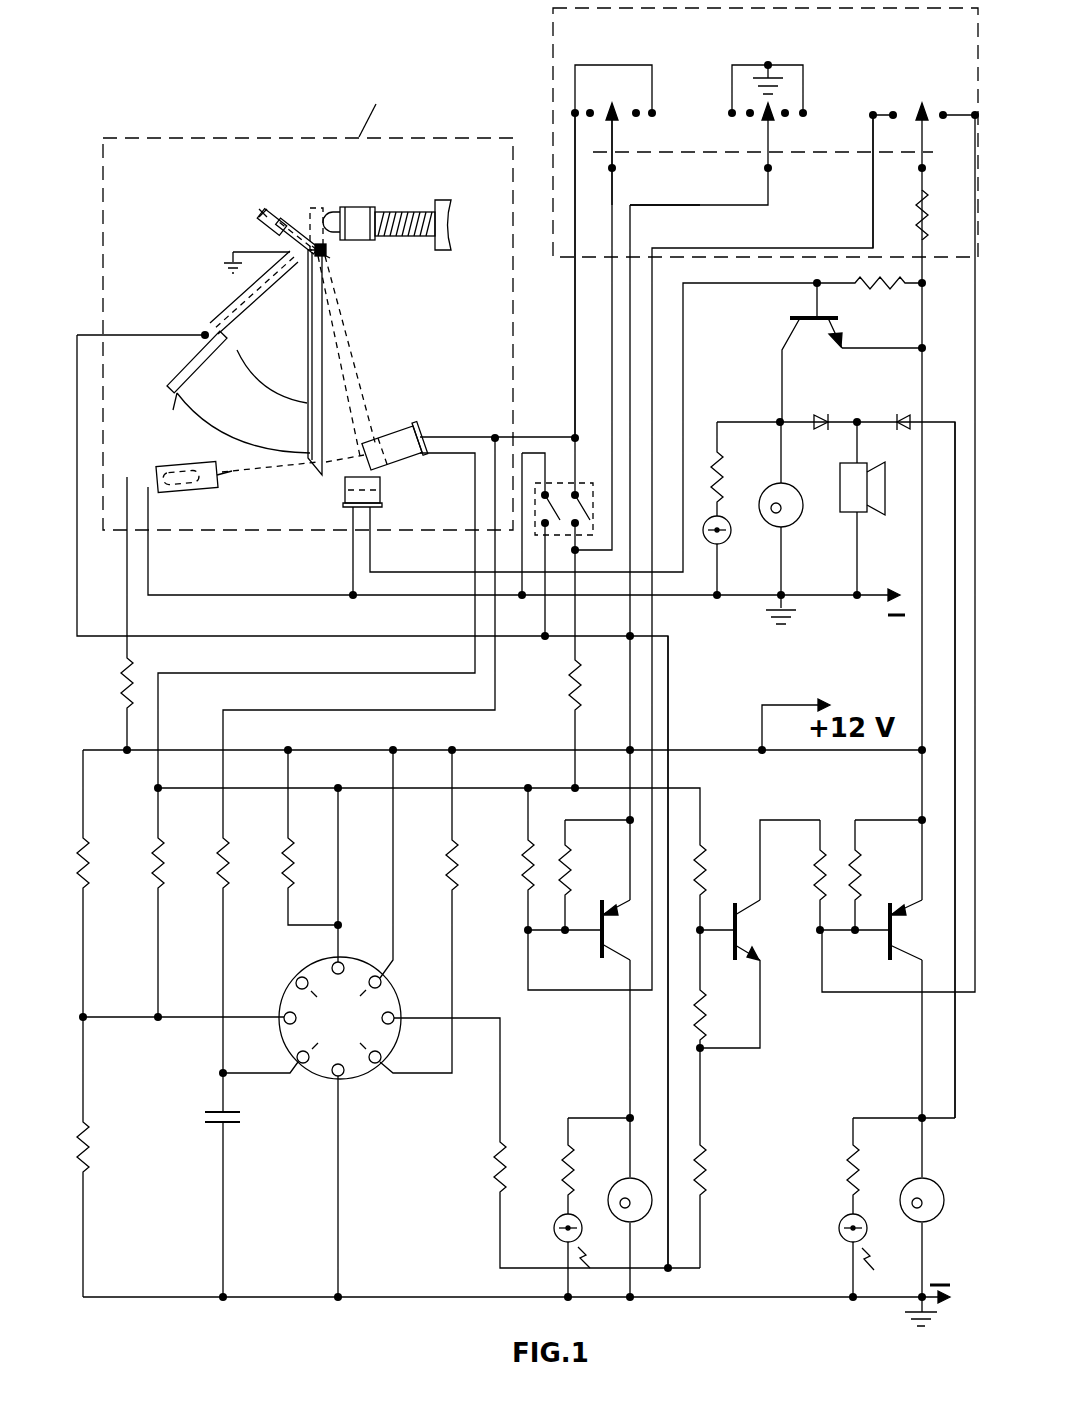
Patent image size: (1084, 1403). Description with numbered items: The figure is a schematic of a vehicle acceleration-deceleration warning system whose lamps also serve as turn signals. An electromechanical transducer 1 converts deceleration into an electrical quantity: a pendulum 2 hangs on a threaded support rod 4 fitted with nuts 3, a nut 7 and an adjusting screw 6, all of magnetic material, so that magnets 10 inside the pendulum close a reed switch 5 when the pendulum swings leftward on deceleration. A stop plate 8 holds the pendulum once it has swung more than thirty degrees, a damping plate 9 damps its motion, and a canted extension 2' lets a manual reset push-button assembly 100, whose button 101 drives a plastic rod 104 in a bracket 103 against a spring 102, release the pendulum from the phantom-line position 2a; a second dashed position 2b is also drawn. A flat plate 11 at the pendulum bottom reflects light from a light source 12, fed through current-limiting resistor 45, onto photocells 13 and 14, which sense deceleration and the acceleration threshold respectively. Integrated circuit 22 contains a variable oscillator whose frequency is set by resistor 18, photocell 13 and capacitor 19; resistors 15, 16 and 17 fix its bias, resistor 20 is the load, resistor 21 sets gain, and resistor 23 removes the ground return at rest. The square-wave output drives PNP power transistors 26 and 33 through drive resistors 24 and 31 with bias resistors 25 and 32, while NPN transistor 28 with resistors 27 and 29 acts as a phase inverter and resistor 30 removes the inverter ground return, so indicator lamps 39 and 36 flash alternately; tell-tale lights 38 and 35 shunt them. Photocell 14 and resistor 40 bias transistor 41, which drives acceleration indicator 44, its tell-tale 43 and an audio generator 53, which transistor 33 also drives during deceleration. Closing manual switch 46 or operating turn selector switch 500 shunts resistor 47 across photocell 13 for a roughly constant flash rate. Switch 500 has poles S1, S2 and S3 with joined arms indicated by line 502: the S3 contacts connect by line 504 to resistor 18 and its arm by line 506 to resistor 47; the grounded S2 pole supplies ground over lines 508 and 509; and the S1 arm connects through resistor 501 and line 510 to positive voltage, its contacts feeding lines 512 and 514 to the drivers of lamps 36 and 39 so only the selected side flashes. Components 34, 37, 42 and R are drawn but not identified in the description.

The electromechanical transducer 1 is at (380, 109).
The pendulum 2 is at (390, 341).
The canted extension 2' is at (287, 210).
The phantom line position 2a is at (253, 317).
The transmitted light path 2b is at (348, 383).
The nuts 3 is at (322, 254).
The threaded support rod 4 is at (287, 238).
The reed switch 5 is at (252, 284).
The screw 6 is at (258, 208).
The nut 7 is at (262, 220).
The mechanical stop plate 8 is at (187, 369).
The damping plate 9 is at (207, 410).
The magnets 10 is at (317, 320).
The flat plate 11 is at (316, 458).
The light source 12 is at (186, 488).
The photocell 13 is at (421, 440).
The photocell 14 is at (382, 490).
The resistor 15 is at (89, 900).
The resistor 16 is at (92, 1150).
The resistor 17 is at (154, 855).
The resistor 18 is at (219, 855).
The capacitor 19 is at (200, 1118).
The resistor 20 is at (284, 855).
The resistor 21 is at (448, 855).
The integrated circuit 22 is at (363, 1084).
The resistor 23 is at (495, 1160).
The resistor 24 is at (525, 855).
The resistor 25 is at (571, 858).
The transistor 26 is at (596, 937).
The resistor 27 is at (706, 858).
The transistor 28 is at (752, 935).
The resistor 29 is at (706, 998).
The resistor 30 is at (706, 1158).
The resistor 31 is at (818, 858).
The resistor 32 is at (861, 858).
The transistor 33 is at (885, 948).
The resistor 34 is at (848, 1168).
The tell-tale light 35 is at (840, 1237).
The visual indicator lamp 36 is at (906, 1182).
The resistor 37 is at (563, 1158).
The tell-tale light 38 is at (555, 1243).
The visual indicator lamp 39 is at (616, 1180).
The resistor 40 is at (880, 300).
The transistor 41 is at (809, 342).
The resistor 42 is at (742, 477).
The tell-tale light 43 is at (733, 560).
The acceleration indicator 44 is at (790, 528).
The resistor 45 is at (113, 692).
The double-pole single-throw switch 46 is at (562, 480).
The resistor 47 is at (613, 693).
The audio generator 53 is at (862, 515).
The manual reset push-button assembly 100 is at (372, 190).
The button 101 is at (447, 224).
The spring 102 is at (408, 238).
The bracket 103 is at (376, 212).
The plastic rod 104 is at (330, 212).
The turn selector switch 500 is at (765, 132).
The resistor 501 is at (938, 248).
The line 502 is at (680, 157).
The line 504 is at (572, 353).
The line 506 is at (650, 200).
The line 508 is at (708, 208).
The line 509 is at (700, 688).
The line 510 is at (922, 383).
The line 512 is at (946, 372).
The line 514 is at (868, 186).
The switch pole S1 is at (924, 129).
The neutral switch pole S2 is at (772, 108).
The switch pole S3 is at (615, 110).
The resistor R is at (903, 215).